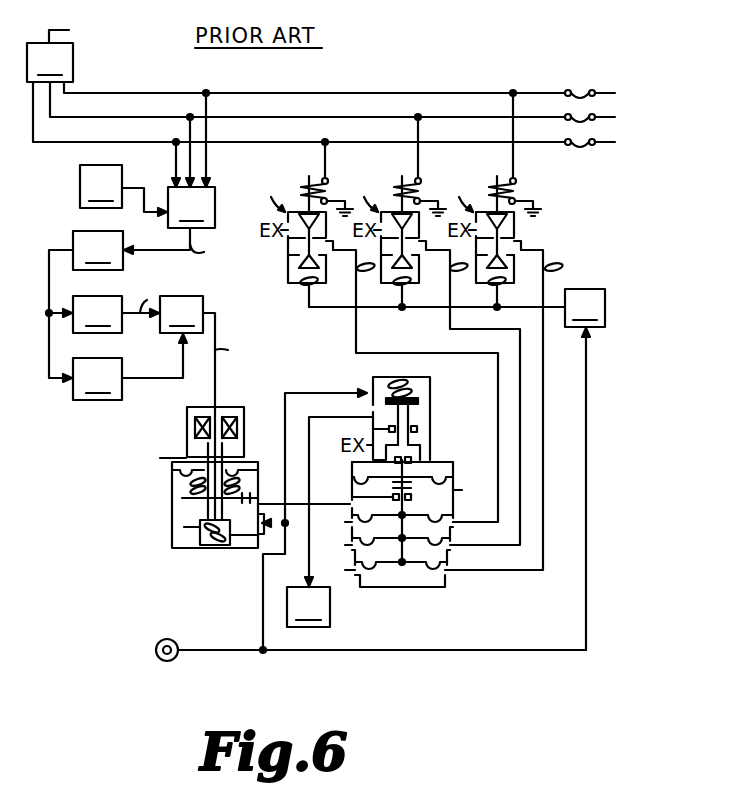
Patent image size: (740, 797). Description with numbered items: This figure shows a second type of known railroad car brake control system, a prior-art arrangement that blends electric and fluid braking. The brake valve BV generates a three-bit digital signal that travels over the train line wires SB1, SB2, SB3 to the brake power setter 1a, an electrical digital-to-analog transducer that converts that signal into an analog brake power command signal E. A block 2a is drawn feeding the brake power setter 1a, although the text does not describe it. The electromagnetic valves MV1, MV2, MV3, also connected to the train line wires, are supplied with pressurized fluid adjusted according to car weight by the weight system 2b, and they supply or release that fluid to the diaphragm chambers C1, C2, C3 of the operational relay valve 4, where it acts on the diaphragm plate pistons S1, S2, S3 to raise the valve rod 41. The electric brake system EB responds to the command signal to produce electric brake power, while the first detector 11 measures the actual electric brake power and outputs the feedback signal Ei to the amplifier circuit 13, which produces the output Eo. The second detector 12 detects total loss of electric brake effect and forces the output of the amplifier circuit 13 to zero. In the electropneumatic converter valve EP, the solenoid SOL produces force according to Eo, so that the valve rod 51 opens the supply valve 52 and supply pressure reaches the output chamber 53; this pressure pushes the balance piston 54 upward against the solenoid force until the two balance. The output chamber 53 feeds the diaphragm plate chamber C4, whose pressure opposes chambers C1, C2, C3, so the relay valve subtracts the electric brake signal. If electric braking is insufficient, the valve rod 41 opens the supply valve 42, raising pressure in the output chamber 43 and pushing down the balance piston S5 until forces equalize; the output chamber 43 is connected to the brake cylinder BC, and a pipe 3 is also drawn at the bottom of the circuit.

The brake power setter 1a is at (191, 207).
The input unit 2a is at (123, 190).
The weight system 2b is at (585, 469).
The first detector 11 is at (116, 306).
The second detector 12 is at (130, 367).
The amplifier circuit 13 is at (206, 351).
The brake pipe 3 is at (160, 645).
The operational relay valve 4 is at (422, 592).
The valve rod 41 is at (412, 420).
The supply valve 42 is at (420, 400).
The output chamber 43 is at (425, 412).
The valve rod 51 is at (228, 458).
The supply valve 52 is at (184, 526).
The output chamber 53 is at (190, 504).
The balance piston 54 is at (180, 484).
The brake valve BV is at (50, 56).
The electric brake system EB is at (145, 249).
The electropneumatic converter valve EP is at (235, 483).
The solenoid SOL is at (194, 424).
The brake cylinder BC is at (308, 607).
The electromagnetic valve MV1 is at (376, 330).
The electromagnetic valve MV2 is at (433, 329).
The electromagnetic valve MV3 is at (502, 330).
The train line wire SB1 is at (292, 141).
The train line wire SB2 is at (370, 116).
The train line wire SB3 is at (448, 92).
The diaphragm plate piston S1 is at (453, 524).
The diaphragm plate piston S2 is at (452, 548).
The diaphragm plate piston S3 is at (452, 573).
The balance piston S5 is at (435, 476).
The diaphragm chamber C1 is at (350, 521).
The diaphragm chamber C2 is at (352, 544).
The diaphragm chamber C3 is at (355, 569).
The diaphragm plate chamber C4 is at (452, 503).